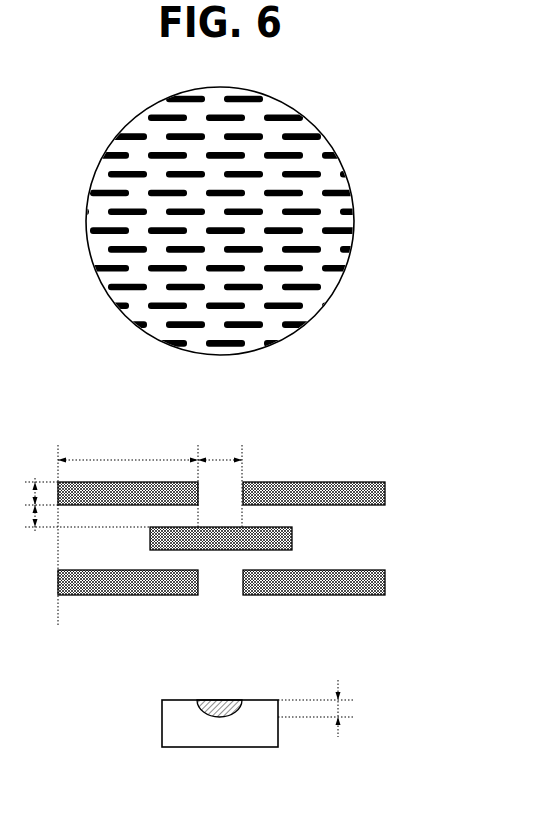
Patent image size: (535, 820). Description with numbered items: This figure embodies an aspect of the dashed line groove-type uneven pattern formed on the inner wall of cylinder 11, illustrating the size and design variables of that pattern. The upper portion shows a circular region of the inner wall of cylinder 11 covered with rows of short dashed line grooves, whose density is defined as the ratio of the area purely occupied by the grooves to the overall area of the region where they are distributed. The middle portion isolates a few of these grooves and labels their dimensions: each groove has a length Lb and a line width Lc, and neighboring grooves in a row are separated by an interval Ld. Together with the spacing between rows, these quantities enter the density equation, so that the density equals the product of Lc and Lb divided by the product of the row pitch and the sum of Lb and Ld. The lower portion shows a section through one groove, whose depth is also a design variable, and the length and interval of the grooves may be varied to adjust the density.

The inner wall of cylinder 11 is at (333, 251).
The length of dashed line groove Lb is at (128, 455).
The line width of dashed line groove Lc is at (36, 491).
The interval between dashed line grooves in the length direction Ld is at (220, 455).